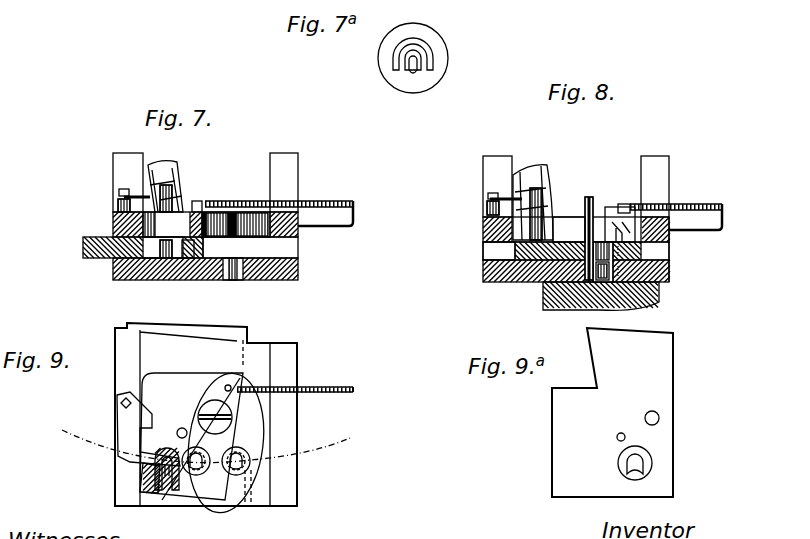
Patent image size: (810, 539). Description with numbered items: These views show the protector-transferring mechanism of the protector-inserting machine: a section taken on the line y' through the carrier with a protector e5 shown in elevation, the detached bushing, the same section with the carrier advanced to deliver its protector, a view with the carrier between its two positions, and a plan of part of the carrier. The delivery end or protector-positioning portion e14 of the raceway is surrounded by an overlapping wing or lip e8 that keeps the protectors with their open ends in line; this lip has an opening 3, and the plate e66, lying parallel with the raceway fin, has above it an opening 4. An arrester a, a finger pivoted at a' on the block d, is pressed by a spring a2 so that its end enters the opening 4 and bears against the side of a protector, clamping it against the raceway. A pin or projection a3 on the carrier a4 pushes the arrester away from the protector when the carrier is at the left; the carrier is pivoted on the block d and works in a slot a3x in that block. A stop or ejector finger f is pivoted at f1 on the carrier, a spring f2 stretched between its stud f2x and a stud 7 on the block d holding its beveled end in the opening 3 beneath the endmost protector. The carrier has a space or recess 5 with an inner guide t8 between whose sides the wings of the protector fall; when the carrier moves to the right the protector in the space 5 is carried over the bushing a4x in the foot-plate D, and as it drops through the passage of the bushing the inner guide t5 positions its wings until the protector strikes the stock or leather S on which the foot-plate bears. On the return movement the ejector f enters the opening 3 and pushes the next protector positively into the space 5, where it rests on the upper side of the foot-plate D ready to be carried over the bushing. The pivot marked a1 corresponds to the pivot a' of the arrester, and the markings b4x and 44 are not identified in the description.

In FIG. 7, the opening 4 is at (140, 193).
In FIG. 8, the opening 4 is at (512, 195).
In FIG. 7, the pivot of arrester a1 is at (119, 191).
In FIG. 8, the pivot of arrester a1 is at (488, 195).
In FIG. 7, the arrester a is at (161, 187).
In FIG. 8, the arrester a is at (540, 219).
In FIG. 9, the arrester a is at (131, 429).
In FIG. 7, the spring a2 is at (118, 207).
In FIG. 8, the spring a2 is at (487, 210).
In FIG. 9, the spring a2 is at (132, 412).
In FIG. 7, the block d is at (113, 226).
In FIG. 8, the block d is at (483, 230).
In FIG. 9, the block d is at (118, 460).
In FIG. 7, the carrier a4 is at (84, 250).
In FIG. 8, the carrier a4 is at (518, 282).
In FIG. 9, the carrier a4 is at (250, 329).
In FIG. 9A, the carrier a4 is at (557, 417).
In FIG. 7, the foot-plate D is at (114, 270).
In FIG. 8, the foot-plate D is at (485, 282).
In FIG. 7, the bearing boss b4x is at (166, 258).
In FIG. 8, the bearing boss b4x is at (590, 262).
In FIG. 9, the bearing boss b4x is at (245, 506).
In FIG. 9A, the bearing boss b4x is at (652, 465).
In FIG. 7, the space or recess 5 is at (188, 258).
In FIG. 9A, the space or recess 5 is at (622, 460).
In FIG. 7, the bushing a4x is at (225, 276).
In FIG. 7A, the bushing a4x is at (438, 56).
In FIG. 8, the bushing a4x is at (598, 272).
In FIG. 9, the bushing a4x is at (252, 468).
In FIG. 7, the overlapping wing or lip e8 is at (180, 170).
In FIG. 8, the overlapping wing or lip e8 is at (545, 170).
In FIG. 7, the protector e5 is at (170, 192).
In FIG. 7A, the protector e5 is at (430, 48).
In FIG. 8, the protector e5 is at (543, 188).
In FIG. 9, the protector e5 is at (199, 470).
In FIG. 7, the pivot of stop or ejector f1 is at (202, 206).
In FIG. 8, the pivot of stop or ejector f1 is at (608, 207).
In FIG. 9, the pivot of stop or ejector f1 is at (232, 417).
In FIG. 7, the spring f2 is at (312, 203).
In FIG. 8, the spring f2 is at (700, 206).
In FIG. 7, the stud 7 is at (355, 222).
In FIG. 8, the stud 7 is at (726, 231).
In FIG. 9, the stud 7 is at (355, 389).
In FIG. 7A, the slot 44 is at (395, 62).
In FIG. 7A, the inner guide t5 is at (413, 76).
In FIG. 9, the inner guide t5 is at (240, 472).
In FIG. 8, the slot a3x is at (487, 253).
In FIG. 8, the stock or leather S is at (659, 297).
In FIG. 8, the pin or projection a3 is at (590, 198).
In FIG. 9, the pin or projection a3 is at (182, 428).
In FIG. 9A, the pin or projection a3 is at (620, 433).
In FIG. 8, the opening 3 is at (556, 217).
In FIG. 8, the stop or ejector f is at (632, 207).
In FIG. 9, the stop or ejector f is at (310, 389).
In FIG. 9, the stud f2x is at (232, 386).
In FIG. 9, the section line y' is at (201, 441).
In FIG. 9, the pivot a' is at (109, 388).
In FIG. 9, the plate e66 is at (148, 486).
In FIG. 9, the delivery end or protector-positioning portion e14 is at (150, 500).
In FIG. 9, the inner guide t8 is at (172, 492).
In FIG. 9A, the inner guide t8 is at (633, 480).